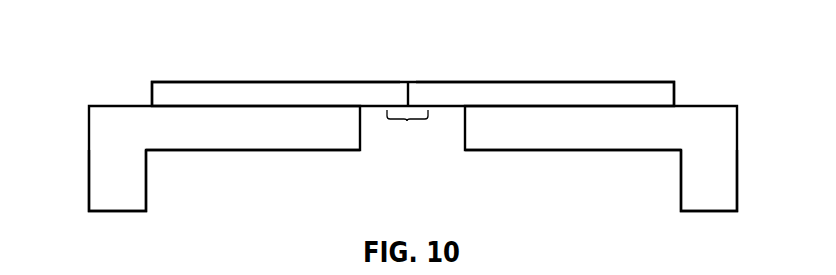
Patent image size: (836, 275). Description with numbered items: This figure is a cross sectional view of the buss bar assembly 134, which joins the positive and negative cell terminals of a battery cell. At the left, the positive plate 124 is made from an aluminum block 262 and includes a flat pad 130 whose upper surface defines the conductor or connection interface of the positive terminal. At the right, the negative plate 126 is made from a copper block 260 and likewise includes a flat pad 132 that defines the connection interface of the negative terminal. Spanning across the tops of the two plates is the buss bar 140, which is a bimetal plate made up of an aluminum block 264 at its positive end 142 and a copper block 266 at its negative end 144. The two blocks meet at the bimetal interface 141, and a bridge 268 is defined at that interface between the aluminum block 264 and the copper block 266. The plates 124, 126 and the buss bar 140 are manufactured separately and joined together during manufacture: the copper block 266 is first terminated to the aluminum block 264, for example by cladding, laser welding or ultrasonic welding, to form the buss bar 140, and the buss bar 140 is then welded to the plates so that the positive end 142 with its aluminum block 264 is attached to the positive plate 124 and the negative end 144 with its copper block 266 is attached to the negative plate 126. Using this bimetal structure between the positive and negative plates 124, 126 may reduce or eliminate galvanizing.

The buss bar assembly 134 is at (675, 38).
The flat pad 130 is at (190, 144).
The flat pad 132 is at (635, 145).
The plate 124 is at (99, 157).
The plate 126 is at (723, 157).
The buss bar 140 is at (412, 72).
The bimetal interface 141 is at (414, 97).
The positive end 142 is at (212, 85).
The negative end 144 is at (608, 85).
The aluminum block 264 is at (281, 85).
The copper block 266 is at (530, 84).
The bridge 268 is at (407, 121).
The copper block 260 is at (558, 152).
The aluminum block 262 is at (233, 138).